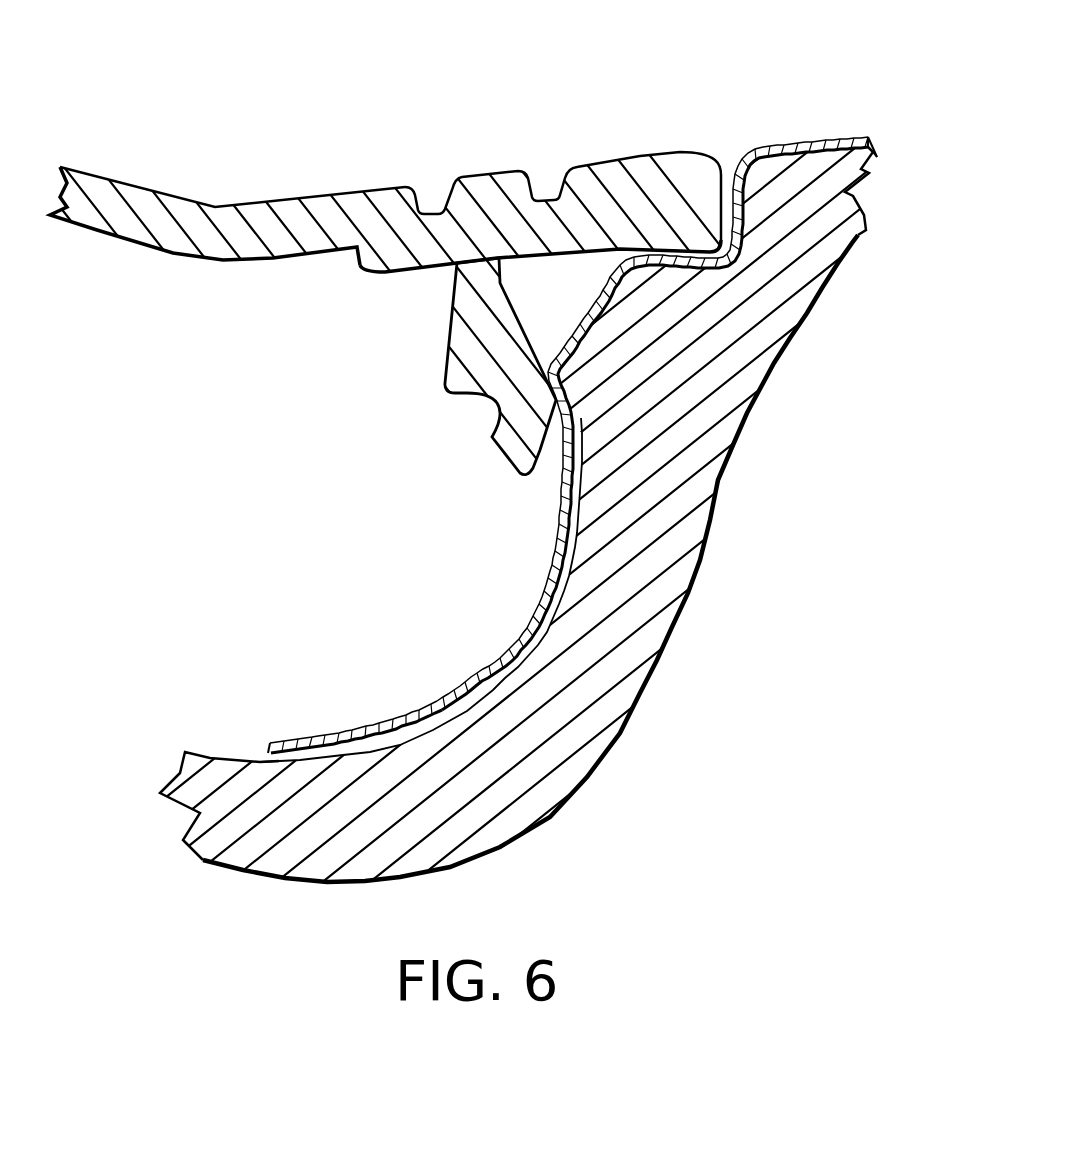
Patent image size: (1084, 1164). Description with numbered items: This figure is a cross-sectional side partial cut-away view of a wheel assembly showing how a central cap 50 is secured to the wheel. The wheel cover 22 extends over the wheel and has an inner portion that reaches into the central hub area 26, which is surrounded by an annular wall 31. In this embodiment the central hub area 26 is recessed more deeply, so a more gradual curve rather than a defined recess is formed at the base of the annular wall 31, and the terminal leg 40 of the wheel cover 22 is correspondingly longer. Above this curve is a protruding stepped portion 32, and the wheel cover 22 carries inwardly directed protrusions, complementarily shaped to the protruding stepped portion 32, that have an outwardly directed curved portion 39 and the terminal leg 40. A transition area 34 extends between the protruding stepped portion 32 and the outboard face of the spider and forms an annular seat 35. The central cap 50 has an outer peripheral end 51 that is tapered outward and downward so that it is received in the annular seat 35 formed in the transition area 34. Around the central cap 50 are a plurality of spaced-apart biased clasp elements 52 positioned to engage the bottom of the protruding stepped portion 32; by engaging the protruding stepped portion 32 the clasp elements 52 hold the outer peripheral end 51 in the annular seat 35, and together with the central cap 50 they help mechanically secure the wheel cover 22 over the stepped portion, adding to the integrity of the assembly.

The wheel cover 22 is at (857, 137).
The central hub area 26 is at (200, 456).
The annular wall 31 is at (603, 507).
The protruding stepped portion 32 is at (607, 330).
The transition area 34 is at (800, 241).
The annular seat 35 is at (697, 268).
The outwardly directed curved portion 39 is at (436, 681).
The terminal leg 40 is at (342, 740).
The central cap 50 is at (205, 205).
The outer peripheral end 51 is at (643, 157).
The biased clasp elements 52 is at (507, 377).